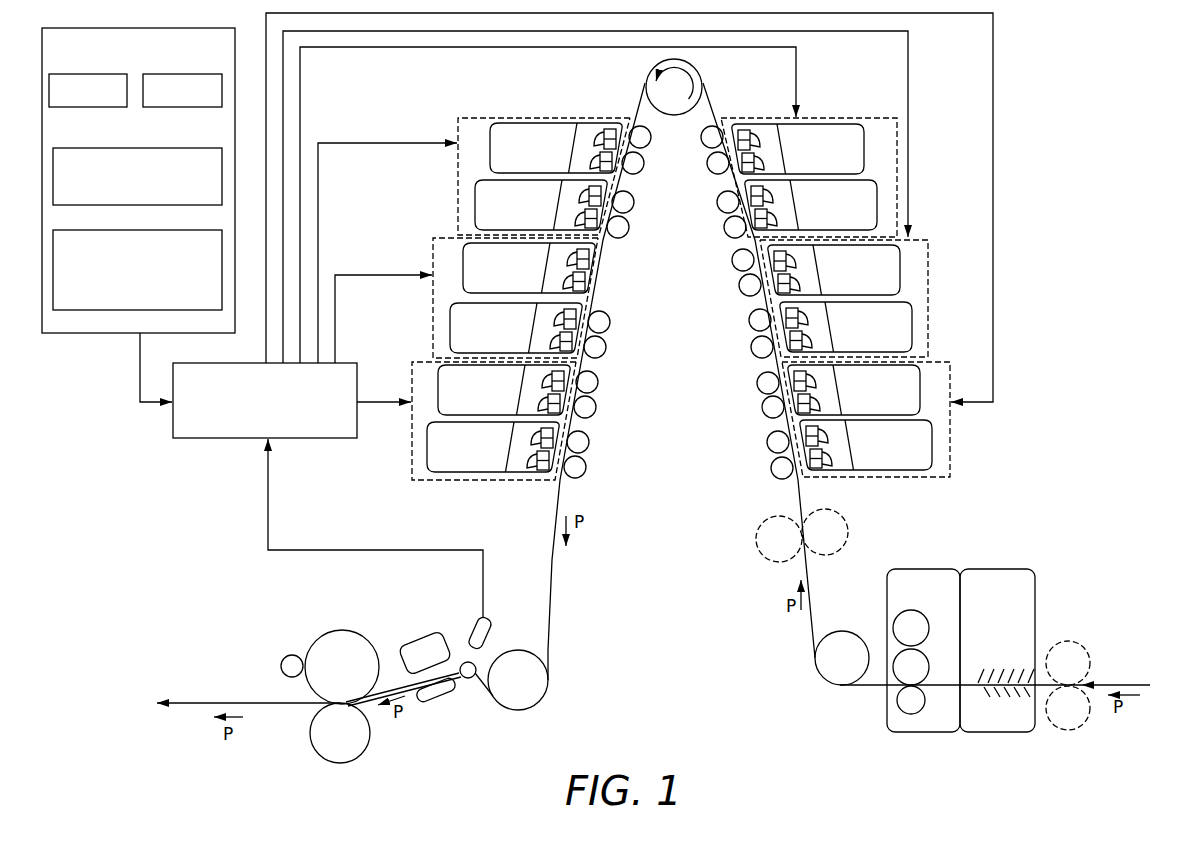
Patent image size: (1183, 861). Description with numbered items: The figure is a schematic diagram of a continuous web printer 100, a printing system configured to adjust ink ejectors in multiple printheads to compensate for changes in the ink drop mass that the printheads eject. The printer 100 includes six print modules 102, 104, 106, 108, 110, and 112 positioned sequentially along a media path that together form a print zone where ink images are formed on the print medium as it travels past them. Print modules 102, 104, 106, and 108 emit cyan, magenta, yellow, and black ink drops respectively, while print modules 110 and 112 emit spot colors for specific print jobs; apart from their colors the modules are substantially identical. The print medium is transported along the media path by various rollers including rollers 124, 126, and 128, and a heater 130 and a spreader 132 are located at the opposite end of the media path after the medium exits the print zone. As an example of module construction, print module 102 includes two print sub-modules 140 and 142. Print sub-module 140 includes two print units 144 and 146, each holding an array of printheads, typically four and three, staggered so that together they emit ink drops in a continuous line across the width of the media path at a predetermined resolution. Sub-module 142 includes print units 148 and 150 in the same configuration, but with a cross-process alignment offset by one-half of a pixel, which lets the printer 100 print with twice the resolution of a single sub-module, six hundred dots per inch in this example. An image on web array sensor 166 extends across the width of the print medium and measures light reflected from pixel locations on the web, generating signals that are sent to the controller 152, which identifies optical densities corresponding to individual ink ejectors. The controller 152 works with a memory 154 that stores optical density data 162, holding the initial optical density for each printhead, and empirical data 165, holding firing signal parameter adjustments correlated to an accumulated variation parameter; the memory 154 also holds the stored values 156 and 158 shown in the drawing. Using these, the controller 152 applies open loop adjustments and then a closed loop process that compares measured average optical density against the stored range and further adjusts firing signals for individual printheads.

The continuous web printer 100 is at (1008, 110).
The print module 102 is at (891, 416).
The print module 104 is at (925, 240).
The print module 106 is at (840, 118).
The print module 108 is at (472, 118).
The print module 110 is at (443, 238).
The print module 112 is at (420, 362).
The roller 124 is at (850, 632).
The roller 126 is at (520, 650).
The roller 128 is at (672, 115).
The heater 130 is at (410, 636).
The spreader 132 is at (314, 639).
The print sub-module 140 is at (900, 445).
The print sub-module 142 is at (880, 369).
The print unit 144 is at (821, 458).
The print unit 146 is at (817, 436).
The print unit 148 is at (809, 403).
The print unit 150 is at (805, 381).
The controller 152 is at (215, 438).
The memory 154 is at (88, 333).
The peak-to-peak voltage data 156 is at (80, 74).
The threshold voltage data 158 is at (189, 74).
The optical density data 162 is at (112, 148).
The empirical data 165 is at (118, 230).
The image on web array (IOWA) sensor 166 is at (470, 626).